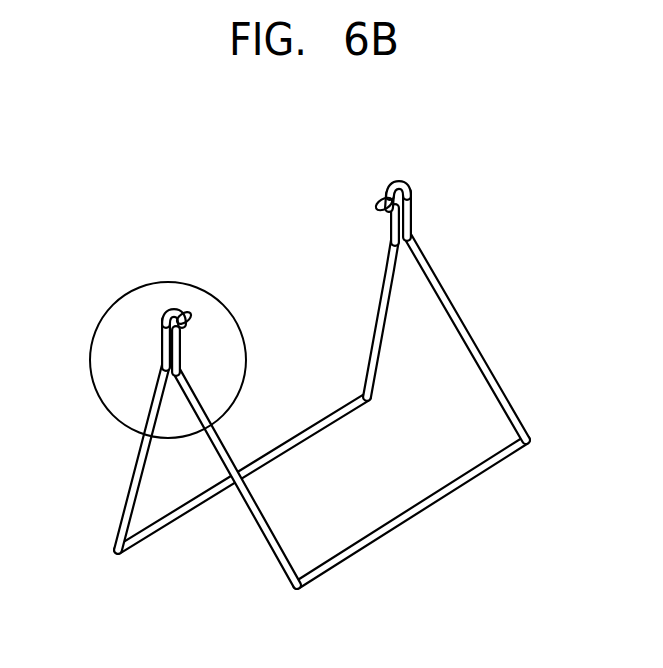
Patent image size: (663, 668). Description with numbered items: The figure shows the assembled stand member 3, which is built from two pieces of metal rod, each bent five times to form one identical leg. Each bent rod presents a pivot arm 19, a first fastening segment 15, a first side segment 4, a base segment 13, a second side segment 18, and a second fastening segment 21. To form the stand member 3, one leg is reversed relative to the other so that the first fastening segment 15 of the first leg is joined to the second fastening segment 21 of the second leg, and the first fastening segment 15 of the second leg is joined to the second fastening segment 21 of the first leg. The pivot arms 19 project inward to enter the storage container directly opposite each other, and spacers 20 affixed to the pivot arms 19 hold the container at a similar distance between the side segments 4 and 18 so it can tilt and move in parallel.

The stand member 3 is at (317, 367).
The first side segment 4 is at (139, 459).
The base segment 13 is at (283, 463).
The first fastening segment 15 is at (161, 347).
The second side segment 18 is at (264, 532).
The pivot arm 19 is at (189, 316).
The spacer 20 is at (170, 312).
The second fastening segment 21 is at (180, 350).